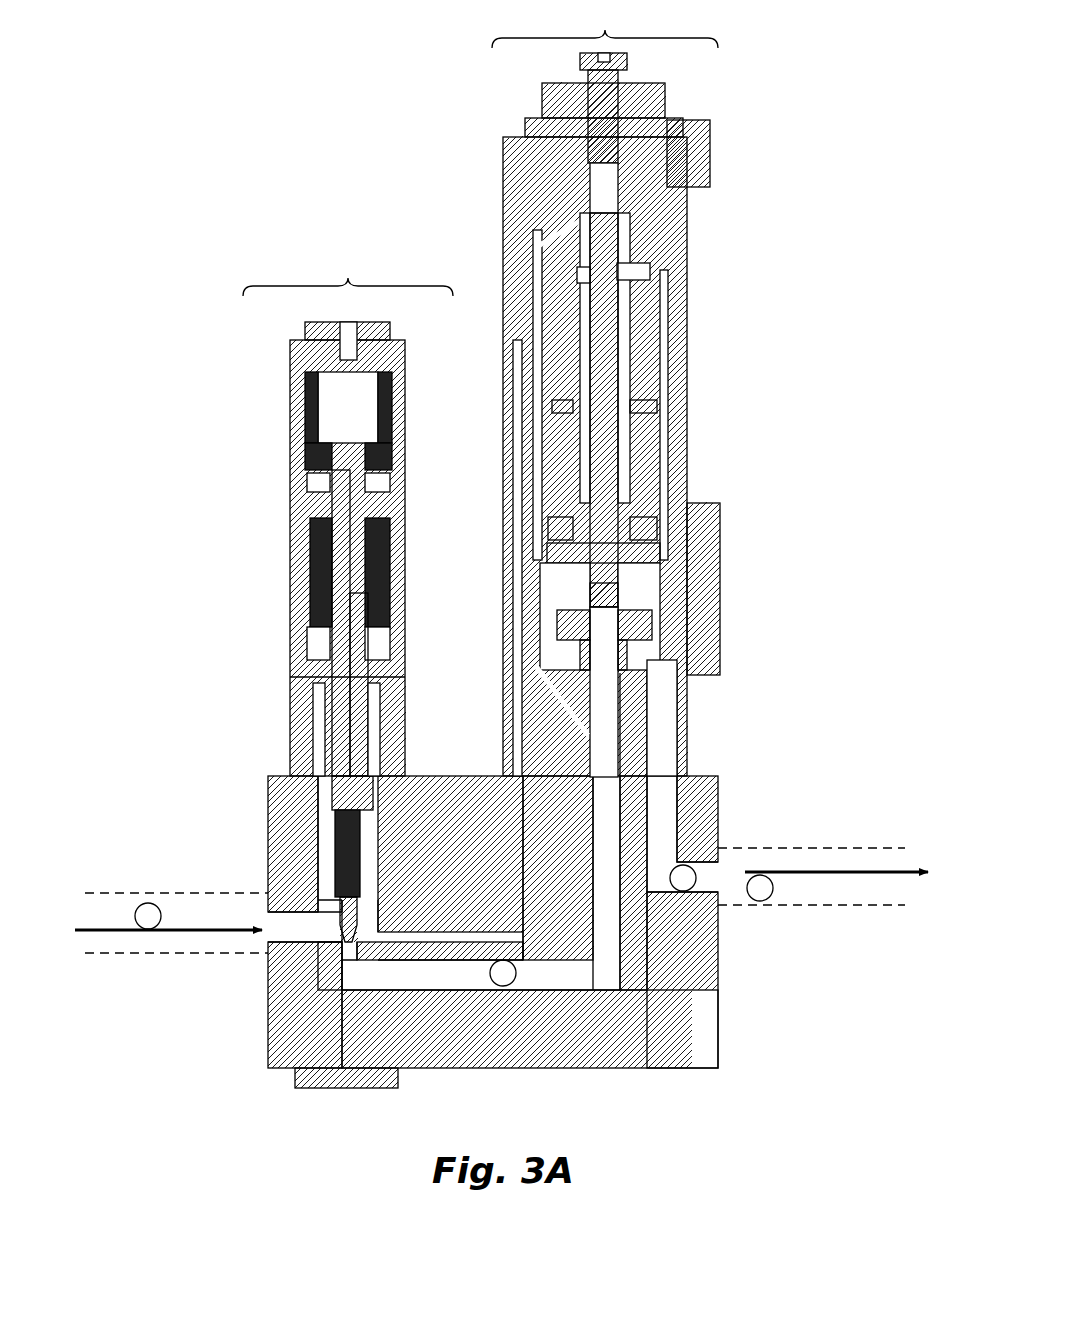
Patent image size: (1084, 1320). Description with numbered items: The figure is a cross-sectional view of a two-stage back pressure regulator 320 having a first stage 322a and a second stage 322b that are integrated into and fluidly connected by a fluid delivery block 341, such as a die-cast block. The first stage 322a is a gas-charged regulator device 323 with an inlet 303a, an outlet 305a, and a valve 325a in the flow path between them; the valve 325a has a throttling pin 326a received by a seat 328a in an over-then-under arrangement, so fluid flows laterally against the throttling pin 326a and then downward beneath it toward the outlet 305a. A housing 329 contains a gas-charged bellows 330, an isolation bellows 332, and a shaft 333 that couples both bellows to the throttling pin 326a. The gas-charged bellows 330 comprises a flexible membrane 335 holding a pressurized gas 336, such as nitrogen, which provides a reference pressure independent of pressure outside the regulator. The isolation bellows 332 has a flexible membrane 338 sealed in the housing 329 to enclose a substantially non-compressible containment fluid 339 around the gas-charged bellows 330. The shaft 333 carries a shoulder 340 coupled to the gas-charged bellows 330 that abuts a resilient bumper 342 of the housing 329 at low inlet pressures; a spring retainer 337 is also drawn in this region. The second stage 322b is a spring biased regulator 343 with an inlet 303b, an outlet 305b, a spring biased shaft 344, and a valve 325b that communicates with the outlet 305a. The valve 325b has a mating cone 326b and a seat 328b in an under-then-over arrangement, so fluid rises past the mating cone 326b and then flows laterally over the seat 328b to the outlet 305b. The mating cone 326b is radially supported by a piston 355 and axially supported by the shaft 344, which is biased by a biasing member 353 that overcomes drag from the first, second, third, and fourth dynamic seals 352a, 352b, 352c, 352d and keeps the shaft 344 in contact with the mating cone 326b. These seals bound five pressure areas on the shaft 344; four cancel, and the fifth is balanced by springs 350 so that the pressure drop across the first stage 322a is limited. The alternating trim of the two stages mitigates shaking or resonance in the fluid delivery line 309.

The two-stage back pressure regulator 320 is at (501, 557).
The first stage 322a is at (299, 513).
The second stage 322b is at (571, 391).
The gas-charged regulator device 323 is at (318, 332).
The valve 325a is at (335, 950).
The valve 325b is at (625, 600).
The throttling pin 326a is at (345, 910).
The mating cone 326b is at (590, 587).
The seat 328a is at (333, 955).
The seat 328b is at (575, 634).
The housing 329 is at (310, 513).
The gas-charged bellows 330 is at (315, 410).
The isolation bellows 332 is at (318, 605).
The shaft 333 is at (335, 740).
The flexible membrane 335 is at (318, 435).
The gas 336 is at (350, 405).
The spring retainer 337 is at (330, 495).
The flexible membrane 338 is at (380, 610).
The containment fluid 339 is at (320, 620).
The shoulder 340 is at (385, 470).
The fluid delivery block 341 is at (458, 792).
The resilient bumper 342 is at (322, 470).
The spring biased regulator 343 is at (515, 182).
The shaft 344 is at (567, 490).
The springs 350 is at (645, 478).
The first dynamic seal 352a is at (620, 264).
The second dynamic seal 352b is at (575, 557).
The third dynamic seal 352c is at (570, 305).
The fourth dynamic seal 352d is at (570, 352).
The biasing member 353 is at (596, 490).
The piston 355 is at (650, 420).
The inlet 303a is at (222, 925).
The inlet 303b is at (607, 822).
The outlet 305a is at (410, 975).
The outlet 305b is at (723, 857).
The fluid delivery line 309 is at (318, 918).